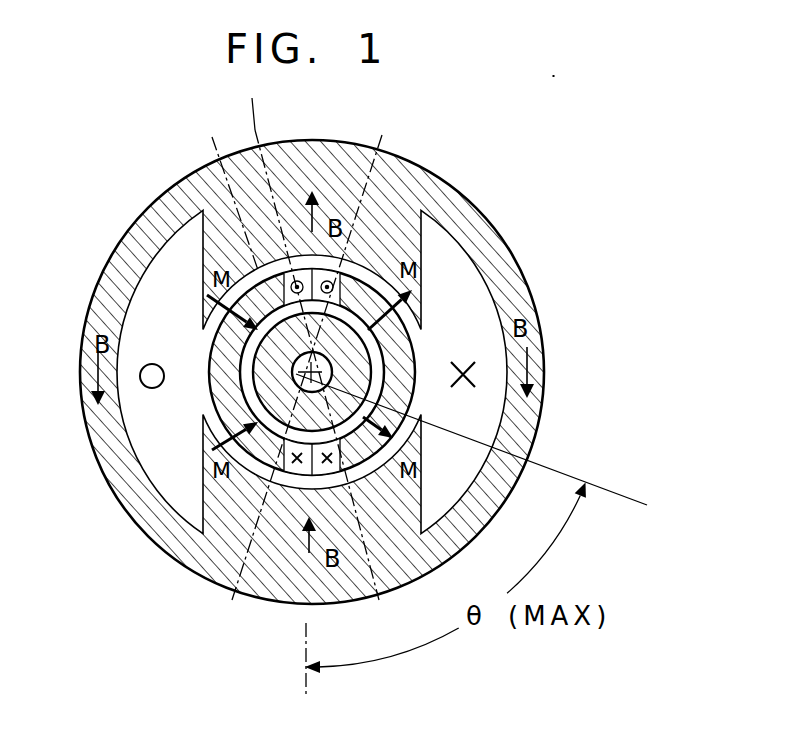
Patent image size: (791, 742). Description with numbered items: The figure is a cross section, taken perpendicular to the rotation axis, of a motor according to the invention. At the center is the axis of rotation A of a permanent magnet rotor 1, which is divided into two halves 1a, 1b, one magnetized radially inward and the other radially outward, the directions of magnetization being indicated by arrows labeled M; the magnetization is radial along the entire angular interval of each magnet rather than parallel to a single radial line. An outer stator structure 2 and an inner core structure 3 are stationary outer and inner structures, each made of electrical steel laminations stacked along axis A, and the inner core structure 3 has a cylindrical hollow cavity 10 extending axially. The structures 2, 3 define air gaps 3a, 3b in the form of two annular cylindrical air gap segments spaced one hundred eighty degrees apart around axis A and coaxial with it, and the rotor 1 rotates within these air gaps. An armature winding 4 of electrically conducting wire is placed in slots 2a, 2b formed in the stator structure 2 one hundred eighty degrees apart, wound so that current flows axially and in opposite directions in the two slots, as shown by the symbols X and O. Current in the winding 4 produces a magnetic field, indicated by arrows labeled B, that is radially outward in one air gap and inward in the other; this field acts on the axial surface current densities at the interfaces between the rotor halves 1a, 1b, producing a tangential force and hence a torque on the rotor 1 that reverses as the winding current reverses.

The permanent magnet rotor 1 is at (382, 135).
The rotor half 1a is at (417, 353).
The rotor half 1b is at (206, 348).
The outer stator structure 2 is at (510, 245).
The slot 2a is at (176, 468).
The slot 2b is at (448, 255).
The inner core structure 3 is at (296, 381).
The air gap 3a is at (212, 137).
The air gap 3b is at (252, 98).
The armature winding 4 is at (141, 362).
The cylindrical hollow cavity 10 is at (287, 378).
The axis of rotation A is at (379, 600).